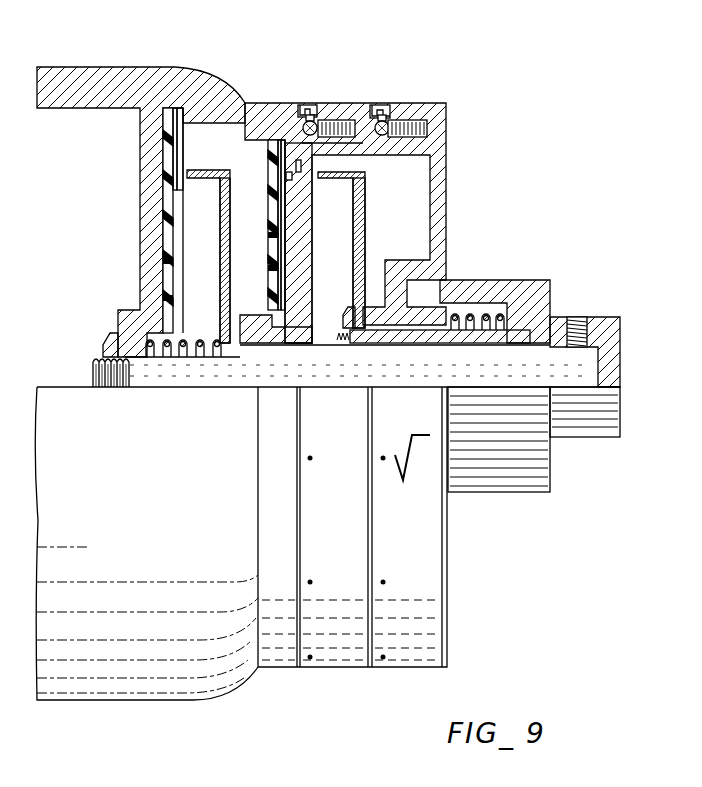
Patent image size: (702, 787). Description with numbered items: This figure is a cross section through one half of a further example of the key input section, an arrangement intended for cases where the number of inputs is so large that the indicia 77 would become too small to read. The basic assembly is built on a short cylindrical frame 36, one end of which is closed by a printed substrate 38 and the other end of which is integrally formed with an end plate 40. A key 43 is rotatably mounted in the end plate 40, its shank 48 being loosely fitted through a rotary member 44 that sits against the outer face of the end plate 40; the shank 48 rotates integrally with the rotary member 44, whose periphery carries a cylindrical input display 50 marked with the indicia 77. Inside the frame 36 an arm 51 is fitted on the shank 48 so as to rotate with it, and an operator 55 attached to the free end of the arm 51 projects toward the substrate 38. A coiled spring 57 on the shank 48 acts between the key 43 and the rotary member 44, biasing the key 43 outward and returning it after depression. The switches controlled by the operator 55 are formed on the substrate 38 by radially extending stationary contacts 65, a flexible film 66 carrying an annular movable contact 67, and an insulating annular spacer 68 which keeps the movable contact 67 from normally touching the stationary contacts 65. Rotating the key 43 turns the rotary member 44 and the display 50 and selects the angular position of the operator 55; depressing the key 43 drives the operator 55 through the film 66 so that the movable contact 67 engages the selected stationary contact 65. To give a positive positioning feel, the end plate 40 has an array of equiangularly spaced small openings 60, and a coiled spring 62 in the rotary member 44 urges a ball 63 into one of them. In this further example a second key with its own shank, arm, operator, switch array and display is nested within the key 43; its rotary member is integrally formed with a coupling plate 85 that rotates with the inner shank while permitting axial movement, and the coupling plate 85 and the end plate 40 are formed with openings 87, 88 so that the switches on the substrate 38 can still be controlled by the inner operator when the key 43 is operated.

The cylindrical frame 36 is at (134, 72).
The printed substrate 38 is at (273, 200).
The end plate 40 is at (290, 307).
The key 43 is at (502, 477).
The rotary member 44 is at (437, 138).
The shank 48 is at (458, 335).
The input display 50 is at (348, 104).
The arm 51 is at (223, 223).
The operator 55 is at (203, 178).
The coiled spring 57 is at (490, 312).
The small openings 60 is at (308, 117).
The coiled spring 62 is at (337, 120).
The ball 63 is at (318, 122).
The stationary contacts 65 is at (270, 145).
The flexible film 66 is at (280, 268).
The movable contact 67 is at (279, 145).
The annular spacer 68 is at (280, 235).
The indicia 77 is at (313, 573).
The coupling plate 85 is at (303, 272).
The opening 87 is at (305, 168).
The opening 88 is at (292, 177).